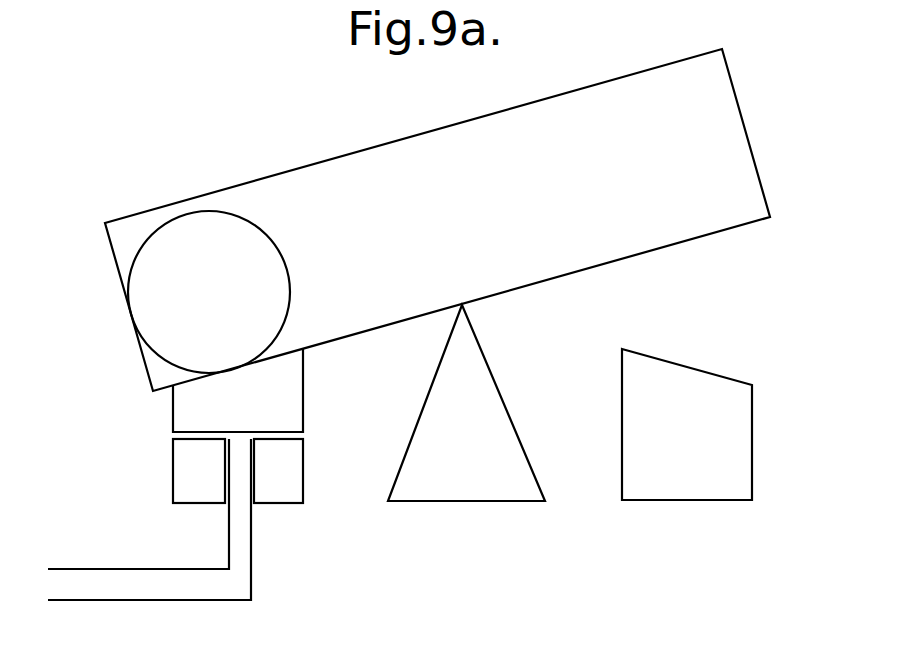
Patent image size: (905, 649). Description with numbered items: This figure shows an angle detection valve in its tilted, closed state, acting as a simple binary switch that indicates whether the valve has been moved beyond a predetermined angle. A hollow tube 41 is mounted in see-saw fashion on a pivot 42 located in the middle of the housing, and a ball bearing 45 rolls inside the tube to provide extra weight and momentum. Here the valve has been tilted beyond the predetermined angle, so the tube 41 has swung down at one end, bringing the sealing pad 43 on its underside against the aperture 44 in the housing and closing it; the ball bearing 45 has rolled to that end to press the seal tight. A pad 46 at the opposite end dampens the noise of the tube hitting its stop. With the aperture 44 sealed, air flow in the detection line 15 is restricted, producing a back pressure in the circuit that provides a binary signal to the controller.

The hollow tube 41 is at (732, 162).
The ball bearing 45 is at (197, 231).
The sealing pad 43 is at (192, 415).
The aperture 44 is at (238, 439).
The detection line 15 is at (90, 593).
The pivot 42 is at (483, 489).
The pad 46 is at (720, 490).